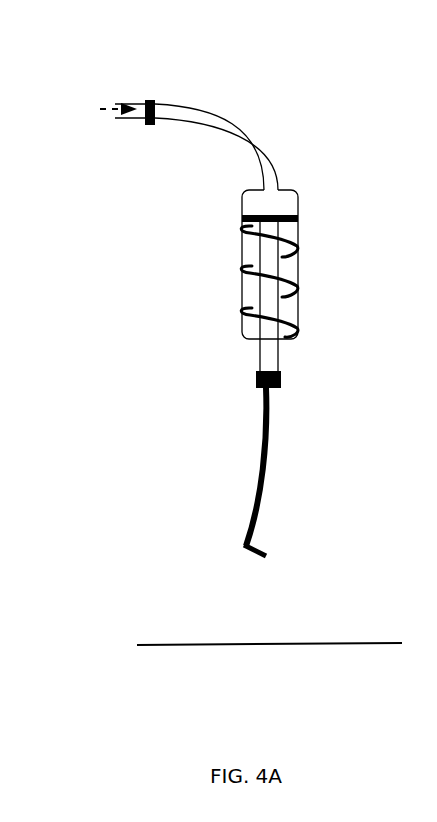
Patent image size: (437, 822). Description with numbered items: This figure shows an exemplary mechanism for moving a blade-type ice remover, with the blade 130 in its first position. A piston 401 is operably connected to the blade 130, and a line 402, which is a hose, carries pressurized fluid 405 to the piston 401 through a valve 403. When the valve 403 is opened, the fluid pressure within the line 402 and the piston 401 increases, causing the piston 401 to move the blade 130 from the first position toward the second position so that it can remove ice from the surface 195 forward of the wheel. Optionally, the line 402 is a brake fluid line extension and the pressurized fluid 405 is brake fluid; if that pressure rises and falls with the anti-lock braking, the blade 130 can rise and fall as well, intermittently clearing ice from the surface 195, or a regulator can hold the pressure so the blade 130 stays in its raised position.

The blade 130 is at (242, 547).
The surface 195 is at (293, 645).
The piston 401 is at (298, 262).
The line 402 is at (257, 136).
The valve 403 is at (153, 101).
The pressurized fluid 405 is at (122, 106).